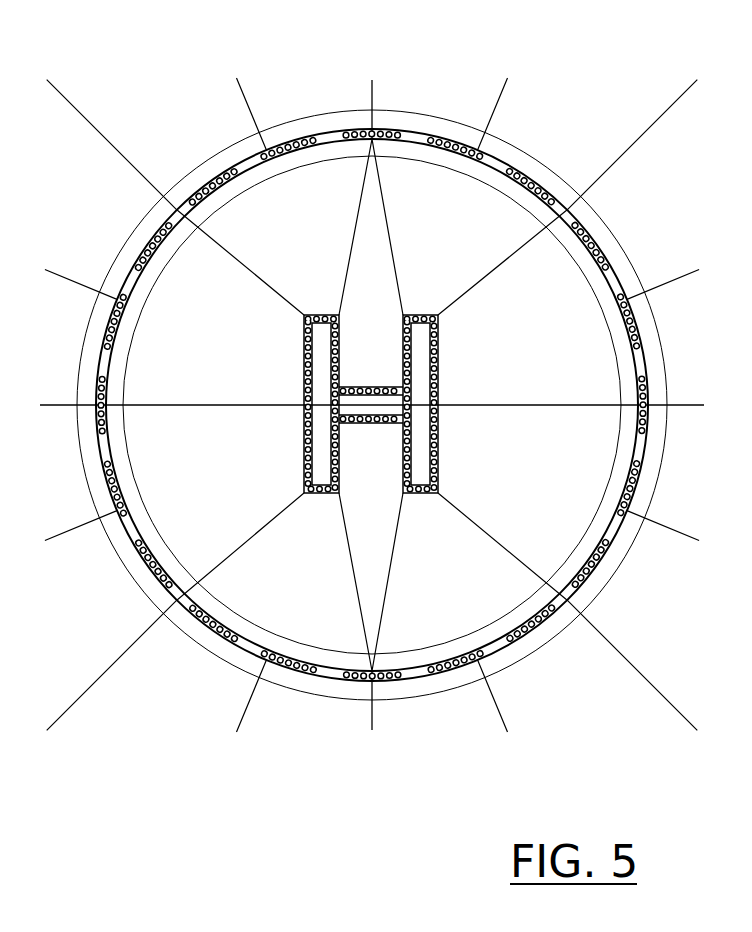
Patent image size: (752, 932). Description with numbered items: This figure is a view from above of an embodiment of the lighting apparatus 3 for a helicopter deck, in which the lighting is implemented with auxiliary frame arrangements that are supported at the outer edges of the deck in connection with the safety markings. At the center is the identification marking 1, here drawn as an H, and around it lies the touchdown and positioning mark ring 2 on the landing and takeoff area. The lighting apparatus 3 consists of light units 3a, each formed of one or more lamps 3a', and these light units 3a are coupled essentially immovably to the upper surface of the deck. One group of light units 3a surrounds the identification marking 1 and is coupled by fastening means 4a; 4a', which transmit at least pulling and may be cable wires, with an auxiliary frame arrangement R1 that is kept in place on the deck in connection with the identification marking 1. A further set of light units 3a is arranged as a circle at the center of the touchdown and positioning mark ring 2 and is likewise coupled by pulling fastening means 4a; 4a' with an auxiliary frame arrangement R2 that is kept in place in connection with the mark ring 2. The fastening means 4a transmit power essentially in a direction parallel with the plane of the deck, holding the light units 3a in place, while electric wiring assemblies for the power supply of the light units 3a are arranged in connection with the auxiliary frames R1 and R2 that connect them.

The identification marking 1 is at (264, 374).
The touchdown and positioning mark ring 2 is at (302, 695).
The lighting apparatus 3 is at (444, 358).
The light units 3a is at (398, 451).
The lamps 3a' is at (262, 268).
The fastening means 4a is at (353, 373).
The fastening means 4a' is at (332, 354).
The auxiliary frame arrangement R1 is at (426, 307).
The auxiliary frame arrangement R2 is at (330, 127).